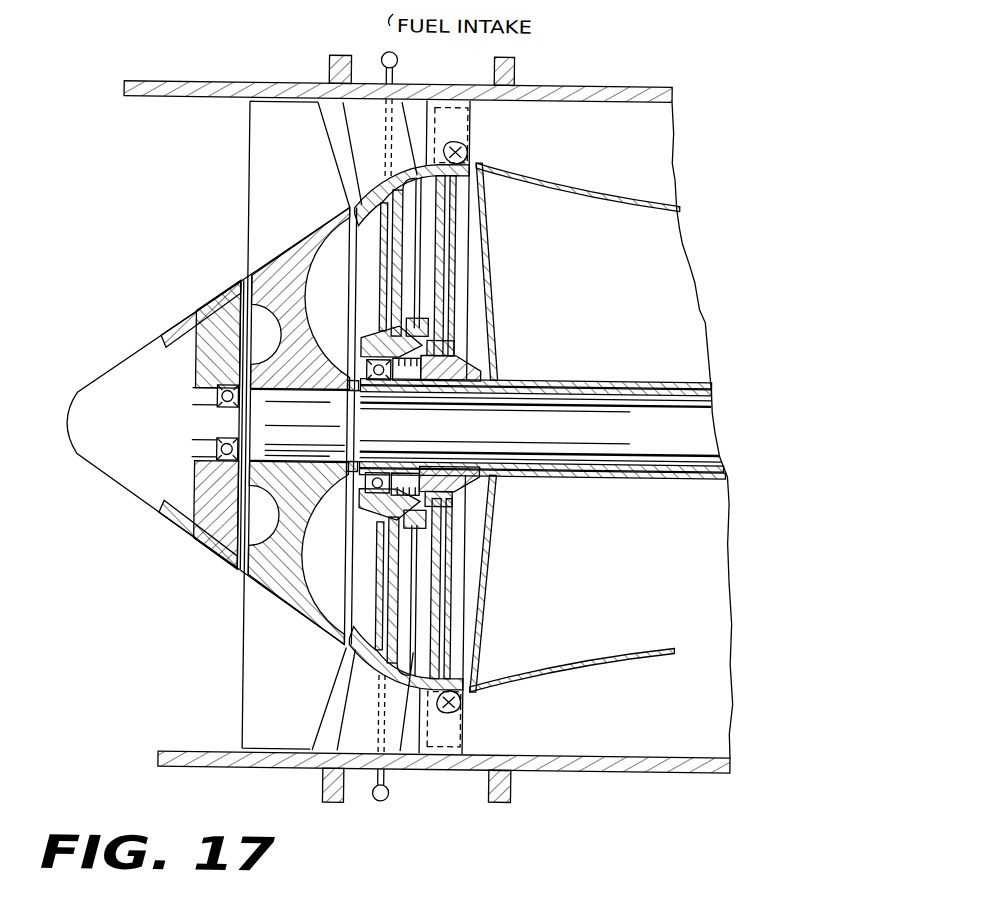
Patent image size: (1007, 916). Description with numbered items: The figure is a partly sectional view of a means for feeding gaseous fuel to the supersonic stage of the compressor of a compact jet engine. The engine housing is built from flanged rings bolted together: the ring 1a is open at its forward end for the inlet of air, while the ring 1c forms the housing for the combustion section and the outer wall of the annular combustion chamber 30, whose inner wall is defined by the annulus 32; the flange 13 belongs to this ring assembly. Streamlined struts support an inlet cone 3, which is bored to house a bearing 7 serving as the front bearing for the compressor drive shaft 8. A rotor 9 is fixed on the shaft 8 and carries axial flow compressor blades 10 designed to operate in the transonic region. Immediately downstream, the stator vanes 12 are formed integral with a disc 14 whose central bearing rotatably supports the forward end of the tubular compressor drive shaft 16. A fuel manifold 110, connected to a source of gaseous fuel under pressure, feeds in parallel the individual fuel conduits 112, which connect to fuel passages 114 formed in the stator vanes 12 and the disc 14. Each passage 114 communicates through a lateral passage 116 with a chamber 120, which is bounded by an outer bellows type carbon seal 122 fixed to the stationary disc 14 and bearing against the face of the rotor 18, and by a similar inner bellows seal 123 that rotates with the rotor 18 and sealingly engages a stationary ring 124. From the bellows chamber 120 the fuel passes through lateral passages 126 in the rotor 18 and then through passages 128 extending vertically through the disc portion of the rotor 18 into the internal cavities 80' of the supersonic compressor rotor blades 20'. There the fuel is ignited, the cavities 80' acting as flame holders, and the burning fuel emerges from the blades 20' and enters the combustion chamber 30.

The housing ring 1a is at (216, 772).
The housing ring 1c is at (605, 90).
The inlet cone 3 is at (128, 476).
The bearing 7 is at (237, 440).
The compressor drive shaft 8 is at (561, 434).
The rotor 9 is at (307, 305).
The axial flow compressor blades 10 is at (284, 179).
The stator vanes 12 is at (366, 124).
The casing flange 13 is at (452, 84).
The disc 14 is at (377, 284).
The tubular compressor drive shaft 16 is at (612, 466).
The rotor 18 is at (445, 640).
The supersonic compressor rotor blades 20' is at (469, 434).
The annular combustion chamber 30 is at (591, 149).
The annulus 32 is at (603, 204).
The internal cavity 80' is at (469, 427).
The fuel manifold 110 is at (394, 61).
The fuel conduits 112 is at (390, 82).
The fuel passages 114 is at (383, 151).
The lateral passage 116 is at (362, 350).
The chamber 120 is at (450, 382).
The nozzle insert 122 is at (420, 330).
The inner bellows seal 123 is at (412, 382).
The stationary ring 124 is at (379, 382).
The lateral passages 126 is at (440, 350).
The passages 128 is at (440, 254).